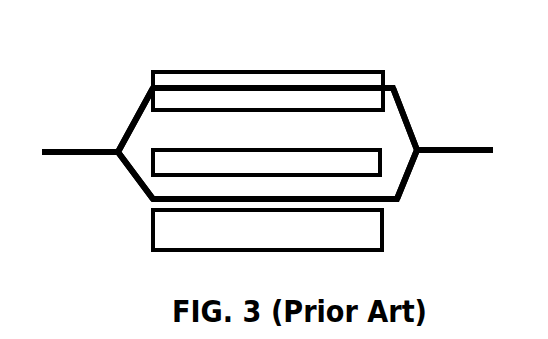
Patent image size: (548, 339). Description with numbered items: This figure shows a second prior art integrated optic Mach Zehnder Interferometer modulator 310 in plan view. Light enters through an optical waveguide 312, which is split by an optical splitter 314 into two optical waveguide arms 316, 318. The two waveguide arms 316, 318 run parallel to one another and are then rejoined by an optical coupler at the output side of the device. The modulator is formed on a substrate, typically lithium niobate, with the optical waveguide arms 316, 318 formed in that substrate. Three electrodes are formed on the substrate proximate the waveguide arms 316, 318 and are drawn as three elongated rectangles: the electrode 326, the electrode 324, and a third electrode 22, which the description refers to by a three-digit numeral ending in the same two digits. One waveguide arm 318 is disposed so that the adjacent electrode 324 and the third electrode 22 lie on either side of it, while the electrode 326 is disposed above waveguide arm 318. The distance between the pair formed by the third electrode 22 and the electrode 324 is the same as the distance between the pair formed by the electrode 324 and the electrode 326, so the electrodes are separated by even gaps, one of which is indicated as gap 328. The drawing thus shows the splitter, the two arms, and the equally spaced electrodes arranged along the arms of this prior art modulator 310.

The modulator 310 is at (130, 50).
The optical waveguide 312 is at (63, 153).
The optical splitter 314 is at (118, 150).
The waveguide arm 316 is at (403, 113).
The waveguide arm 318 is at (405, 185).
The electrode 326 is at (305, 73).
The electrode 324 is at (332, 172).
The lower electrode 22 is at (343, 233).
The gap 328 is at (142, 210).